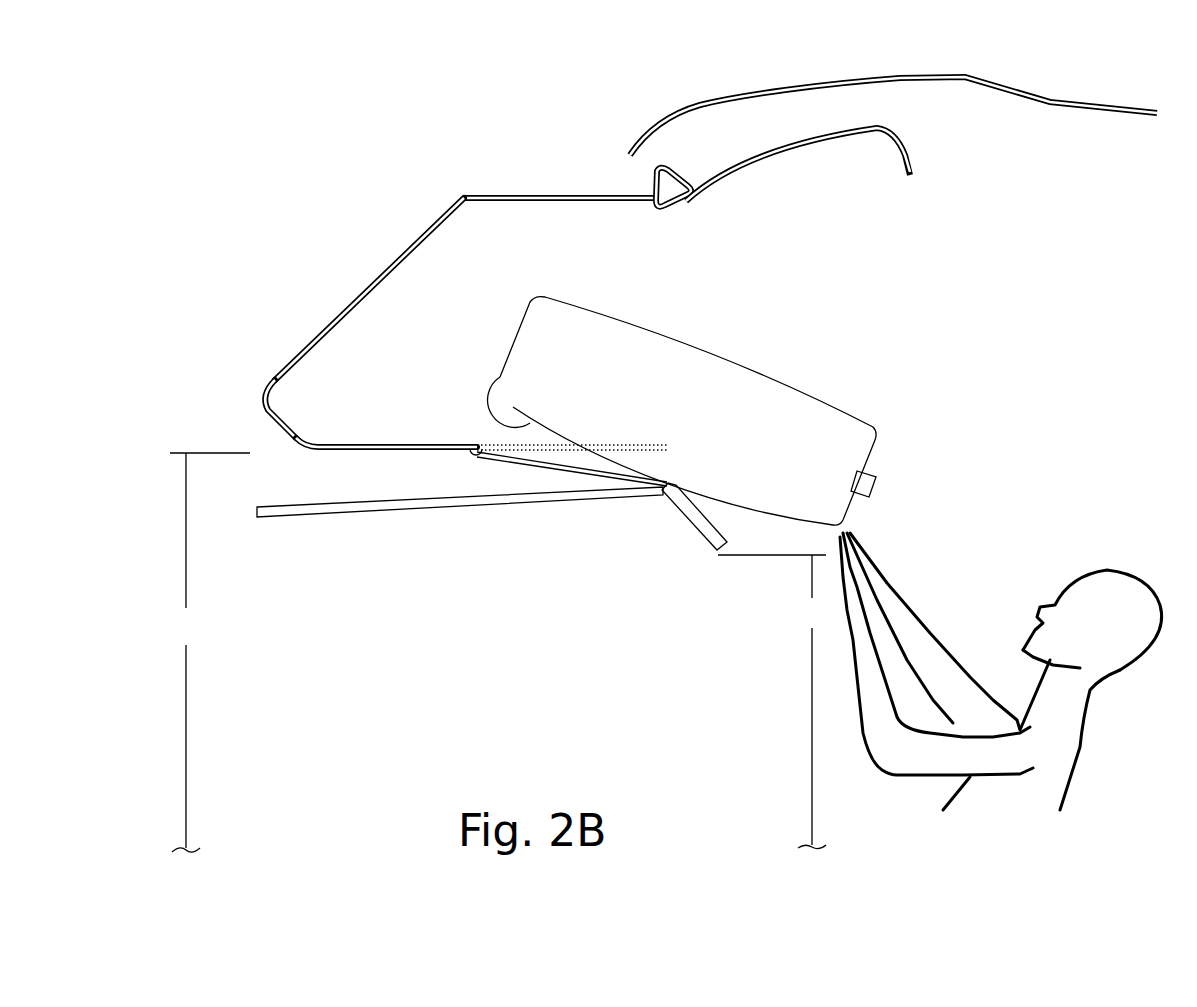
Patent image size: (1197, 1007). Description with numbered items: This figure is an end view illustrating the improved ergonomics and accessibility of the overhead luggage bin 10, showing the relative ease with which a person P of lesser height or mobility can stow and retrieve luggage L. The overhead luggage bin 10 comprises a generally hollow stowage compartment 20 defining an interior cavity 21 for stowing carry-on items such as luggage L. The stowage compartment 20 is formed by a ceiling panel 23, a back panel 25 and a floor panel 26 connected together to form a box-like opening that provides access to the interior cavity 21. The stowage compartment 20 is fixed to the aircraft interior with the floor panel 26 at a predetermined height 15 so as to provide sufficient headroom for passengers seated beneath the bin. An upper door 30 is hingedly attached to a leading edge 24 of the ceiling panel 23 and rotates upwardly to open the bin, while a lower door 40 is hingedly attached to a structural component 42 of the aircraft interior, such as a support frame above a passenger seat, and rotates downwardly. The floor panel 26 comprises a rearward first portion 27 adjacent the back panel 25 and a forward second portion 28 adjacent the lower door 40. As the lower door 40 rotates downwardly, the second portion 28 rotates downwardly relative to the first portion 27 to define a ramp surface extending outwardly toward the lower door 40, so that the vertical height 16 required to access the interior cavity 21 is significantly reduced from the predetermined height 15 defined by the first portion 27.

The overhead luggage bin 10 is at (682, 329).
The predetermined height 15 is at (210, 652).
The vertical height 16 is at (772, 702).
The stowage compartment 20 is at (431, 355).
The interior cavity 21 is at (322, 378).
The ceiling panel 23 is at (487, 200).
The leading edge 24 is at (683, 165).
The back panel 25 is at (377, 282).
The floor panel 26 is at (433, 462).
The first portion 27 is at (400, 442).
The second portion 28 is at (512, 445).
The upper door 30 is at (907, 148).
The lower door 40 is at (697, 532).
The structural component 42 is at (500, 498).
The luggage L is at (740, 383).
The person P is at (1072, 747).